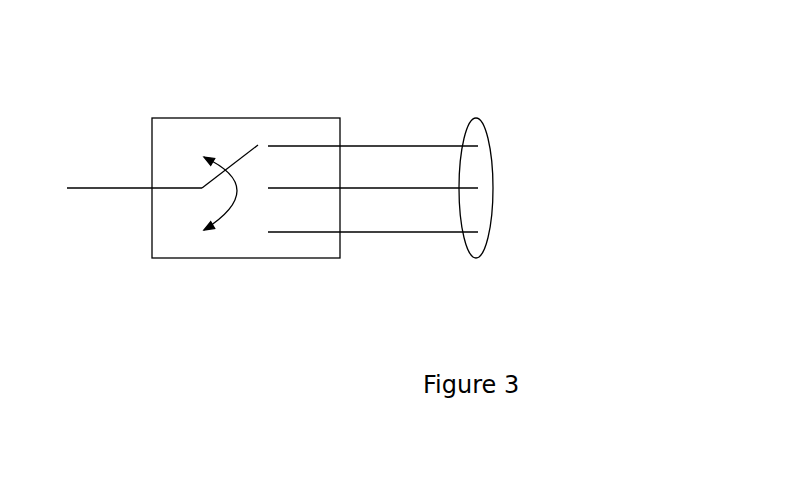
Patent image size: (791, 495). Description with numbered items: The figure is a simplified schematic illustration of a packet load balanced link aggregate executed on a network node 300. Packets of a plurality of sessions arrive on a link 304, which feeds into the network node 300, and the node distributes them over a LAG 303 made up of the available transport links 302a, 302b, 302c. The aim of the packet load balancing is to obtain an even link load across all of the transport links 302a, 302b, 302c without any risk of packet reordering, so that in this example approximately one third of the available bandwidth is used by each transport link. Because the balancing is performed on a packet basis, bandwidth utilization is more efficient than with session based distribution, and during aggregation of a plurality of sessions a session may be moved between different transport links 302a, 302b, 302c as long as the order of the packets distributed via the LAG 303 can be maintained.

The network node 300 is at (233, 118).
The link 304 is at (107, 187).
The transport link 302a is at (372, 146).
The transport link 302b is at (395, 188).
The transport link 302c is at (420, 233).
The LAG 303 is at (493, 198).